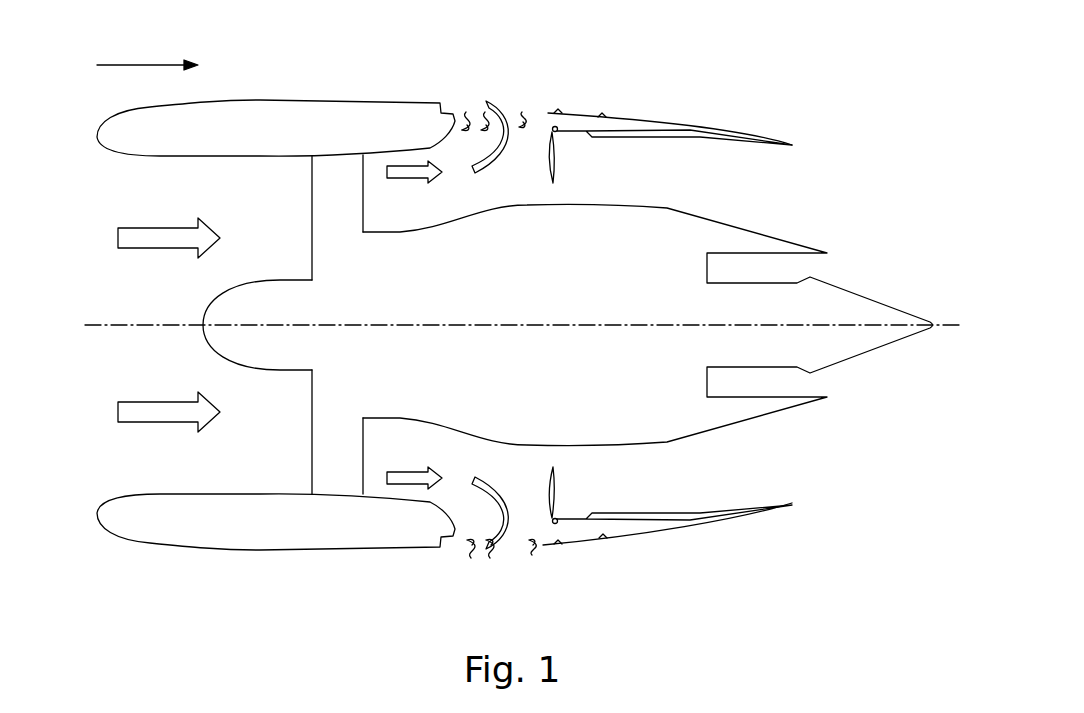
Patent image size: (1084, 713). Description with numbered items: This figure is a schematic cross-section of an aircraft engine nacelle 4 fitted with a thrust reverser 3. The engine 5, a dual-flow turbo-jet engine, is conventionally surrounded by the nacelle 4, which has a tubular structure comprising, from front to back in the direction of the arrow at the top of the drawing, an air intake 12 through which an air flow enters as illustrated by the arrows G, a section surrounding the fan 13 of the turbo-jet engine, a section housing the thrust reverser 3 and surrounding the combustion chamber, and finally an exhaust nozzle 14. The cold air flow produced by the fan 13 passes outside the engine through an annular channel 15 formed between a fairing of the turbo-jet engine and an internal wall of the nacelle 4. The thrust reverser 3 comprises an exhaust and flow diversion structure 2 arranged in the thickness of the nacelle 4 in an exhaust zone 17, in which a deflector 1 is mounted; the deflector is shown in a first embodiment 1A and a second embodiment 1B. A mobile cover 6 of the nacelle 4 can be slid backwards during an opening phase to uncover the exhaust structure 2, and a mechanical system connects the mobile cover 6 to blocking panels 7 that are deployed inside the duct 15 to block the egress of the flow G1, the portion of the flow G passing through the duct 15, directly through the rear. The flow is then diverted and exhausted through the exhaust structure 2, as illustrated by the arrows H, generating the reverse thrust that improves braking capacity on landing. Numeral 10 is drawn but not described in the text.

The deflector 1 is at (142, 64).
The first embodiment of the deflector 1A is at (464, 114).
The second embodiment of the deflector 1B is at (523, 593).
The exhaust structure 2 is at (524, 101).
The thrust reverser 3 is at (597, 159).
The nacelle 4 is at (362, 100).
The engine 5 is at (138, 346).
The mobile cover 6 is at (627, 112).
The blocking panels 7 is at (557, 168).
The fan 10 is at (544, 107).
The air intake 12 is at (92, 204).
The fan 13 is at (311, 452).
The exhaust nozzle 14 is at (882, 352).
The annular channel 15 is at (693, 145).
The exhaust zone 17 is at (502, 85).
The air flow G is at (147, 250).
The flow through the duct G1 is at (409, 183).
The diverted flow H is at (495, 171).